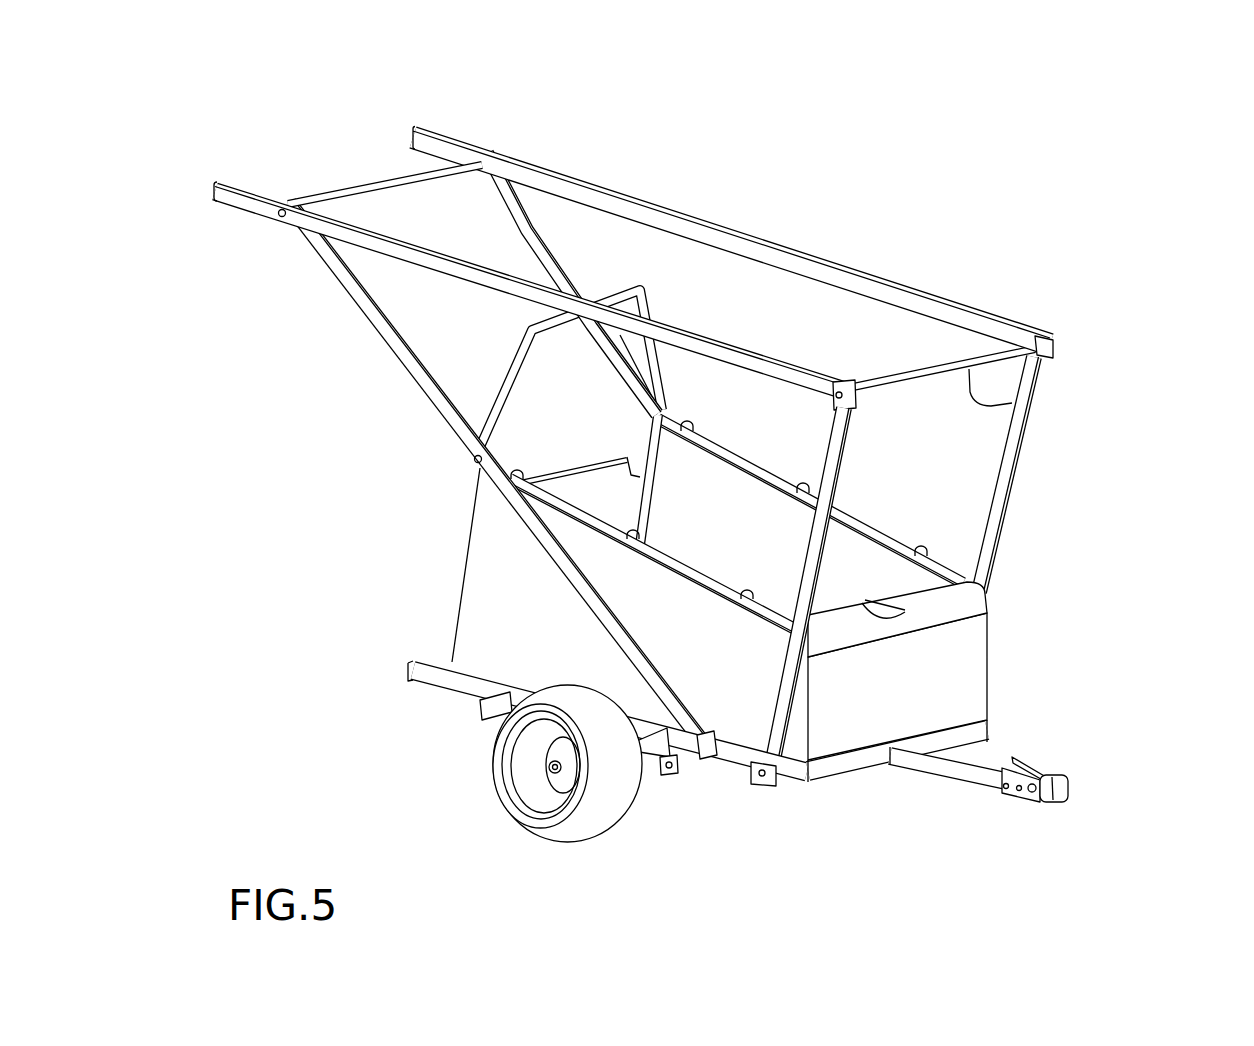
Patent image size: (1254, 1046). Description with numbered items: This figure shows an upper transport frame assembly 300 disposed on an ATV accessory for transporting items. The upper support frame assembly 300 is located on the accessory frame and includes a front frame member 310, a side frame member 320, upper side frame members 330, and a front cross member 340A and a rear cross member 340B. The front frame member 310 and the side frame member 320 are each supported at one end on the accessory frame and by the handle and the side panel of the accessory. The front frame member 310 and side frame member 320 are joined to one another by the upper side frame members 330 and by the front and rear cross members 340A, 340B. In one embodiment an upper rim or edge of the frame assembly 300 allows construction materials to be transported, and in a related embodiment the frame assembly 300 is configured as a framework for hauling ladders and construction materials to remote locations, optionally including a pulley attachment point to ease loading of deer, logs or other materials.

The upper transport frame assembly 300 is at (705, 457).
The front frame member 310 is at (1025, 453).
The side frame member 320 is at (390, 358).
The upper side frame members 330 is at (835, 265).
The front cross member 340A is at (355, 138).
The rear cross member 340B is at (1036, 392).